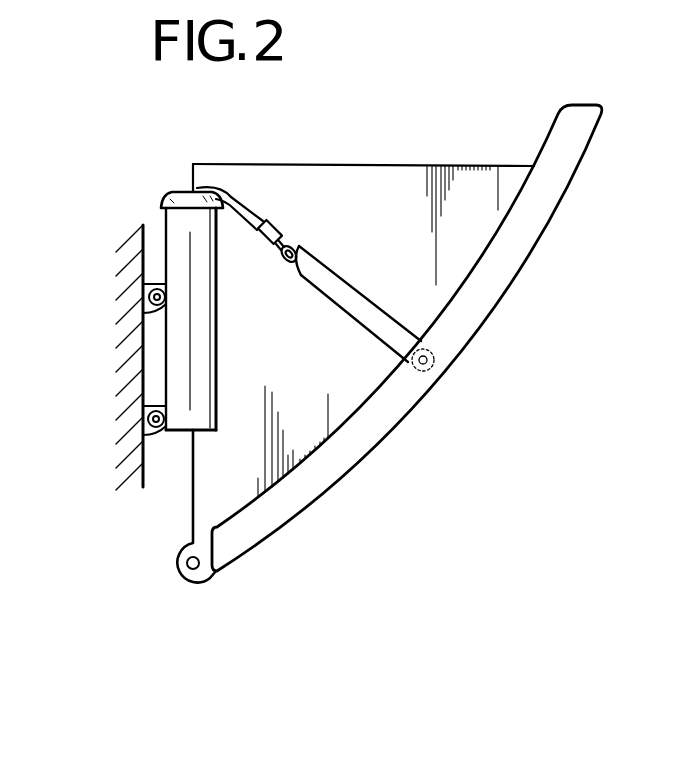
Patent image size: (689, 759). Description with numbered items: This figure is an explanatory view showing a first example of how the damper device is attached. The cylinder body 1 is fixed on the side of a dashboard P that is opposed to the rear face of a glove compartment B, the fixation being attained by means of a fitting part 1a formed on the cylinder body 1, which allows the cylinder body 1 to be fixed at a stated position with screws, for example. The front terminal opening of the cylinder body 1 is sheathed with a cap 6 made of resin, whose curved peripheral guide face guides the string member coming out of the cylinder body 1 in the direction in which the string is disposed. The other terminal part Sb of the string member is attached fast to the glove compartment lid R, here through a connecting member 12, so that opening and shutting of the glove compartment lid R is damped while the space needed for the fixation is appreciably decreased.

The cylinder body 1 is at (207, 348).
The fitting part 1a is at (143, 290).
The cap 6 is at (172, 192).
The connecting member 12 is at (356, 291).
The glove compartment B is at (410, 186).
The glove compartment lid R is at (517, 242).
The dashboard P is at (128, 343).
The other terminal part of the string member Sb is at (247, 210).